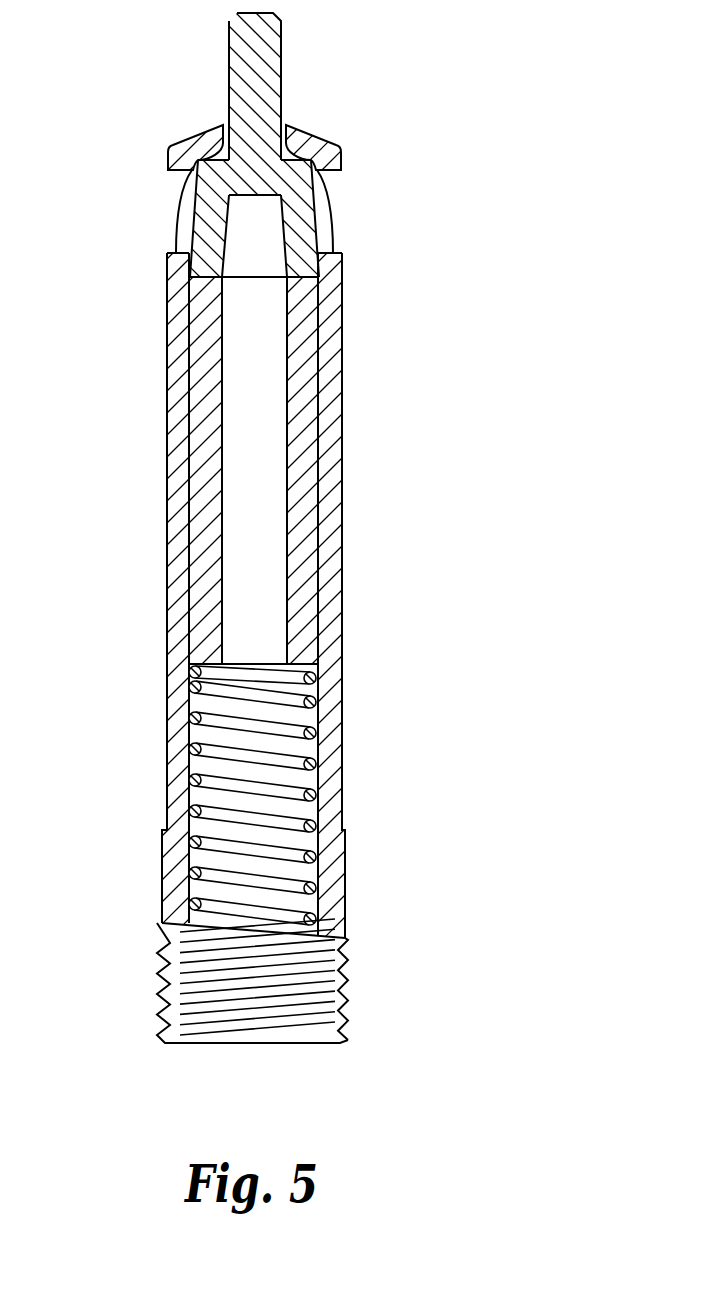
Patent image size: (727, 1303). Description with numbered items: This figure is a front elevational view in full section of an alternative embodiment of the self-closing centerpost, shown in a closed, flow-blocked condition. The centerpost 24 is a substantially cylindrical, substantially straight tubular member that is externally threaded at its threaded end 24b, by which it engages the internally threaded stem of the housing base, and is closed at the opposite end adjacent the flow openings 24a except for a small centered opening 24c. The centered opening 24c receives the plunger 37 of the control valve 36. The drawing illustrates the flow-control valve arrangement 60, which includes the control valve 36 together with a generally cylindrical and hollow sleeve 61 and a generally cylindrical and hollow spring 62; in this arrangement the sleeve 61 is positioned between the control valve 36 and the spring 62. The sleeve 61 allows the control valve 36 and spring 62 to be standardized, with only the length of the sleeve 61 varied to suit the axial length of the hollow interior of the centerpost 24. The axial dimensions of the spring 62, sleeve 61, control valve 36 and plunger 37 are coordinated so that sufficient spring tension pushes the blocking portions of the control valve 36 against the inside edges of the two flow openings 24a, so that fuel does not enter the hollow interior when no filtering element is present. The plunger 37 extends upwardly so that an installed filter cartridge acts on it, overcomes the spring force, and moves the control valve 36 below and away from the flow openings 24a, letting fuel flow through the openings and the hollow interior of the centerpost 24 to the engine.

The centerpost 24 is at (332, 374).
The flow openings 24a is at (188, 185).
The externally threaded end 24b is at (157, 980).
The centered opening 24c is at (283, 122).
The control valve 36 is at (196, 236).
The plunger 37 is at (258, 52).
The flow-control valve arrangement 60 is at (422, 125).
The sleeve 61 is at (203, 450).
The spring 62 is at (243, 731).